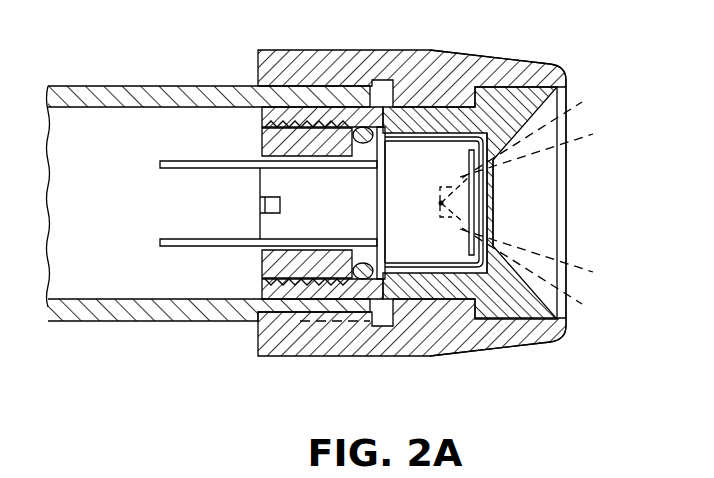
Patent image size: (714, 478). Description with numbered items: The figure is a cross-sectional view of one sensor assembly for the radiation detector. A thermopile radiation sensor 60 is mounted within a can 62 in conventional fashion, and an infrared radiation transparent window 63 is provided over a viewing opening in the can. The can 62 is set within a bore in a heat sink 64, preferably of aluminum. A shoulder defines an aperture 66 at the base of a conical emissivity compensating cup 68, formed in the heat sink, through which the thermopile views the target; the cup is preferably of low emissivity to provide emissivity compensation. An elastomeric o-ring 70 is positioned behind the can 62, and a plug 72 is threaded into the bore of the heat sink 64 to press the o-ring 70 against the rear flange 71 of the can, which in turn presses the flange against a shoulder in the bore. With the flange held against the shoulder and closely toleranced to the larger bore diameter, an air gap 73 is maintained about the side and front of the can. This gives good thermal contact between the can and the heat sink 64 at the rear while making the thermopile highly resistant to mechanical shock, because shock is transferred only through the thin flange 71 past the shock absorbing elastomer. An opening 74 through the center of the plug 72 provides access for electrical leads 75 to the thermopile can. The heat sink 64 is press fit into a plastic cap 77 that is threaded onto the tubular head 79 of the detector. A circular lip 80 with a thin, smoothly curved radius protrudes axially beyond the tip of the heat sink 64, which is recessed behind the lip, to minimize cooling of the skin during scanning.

The thermopile radiation sensor 60 is at (441, 203).
The can 62 is at (422, 253).
The infrared radiation transparent window 63 is at (473, 192).
The heat sink 64 is at (427, 93).
The aperture 66 is at (493, 224).
The conical emissivity compensating cup 68 is at (540, 125).
The elastomeric o-ring 70 is at (363, 127).
The rear flange 71 is at (377, 180).
The plug 72 is at (277, 262).
The air gap 73 is at (440, 263).
The opening 74 is at (277, 152).
The electrical leads 75 is at (180, 240).
The plastic cap 77 is at (498, 58).
The tubular head 79 is at (100, 86).
The circular lip 80 is at (568, 71).